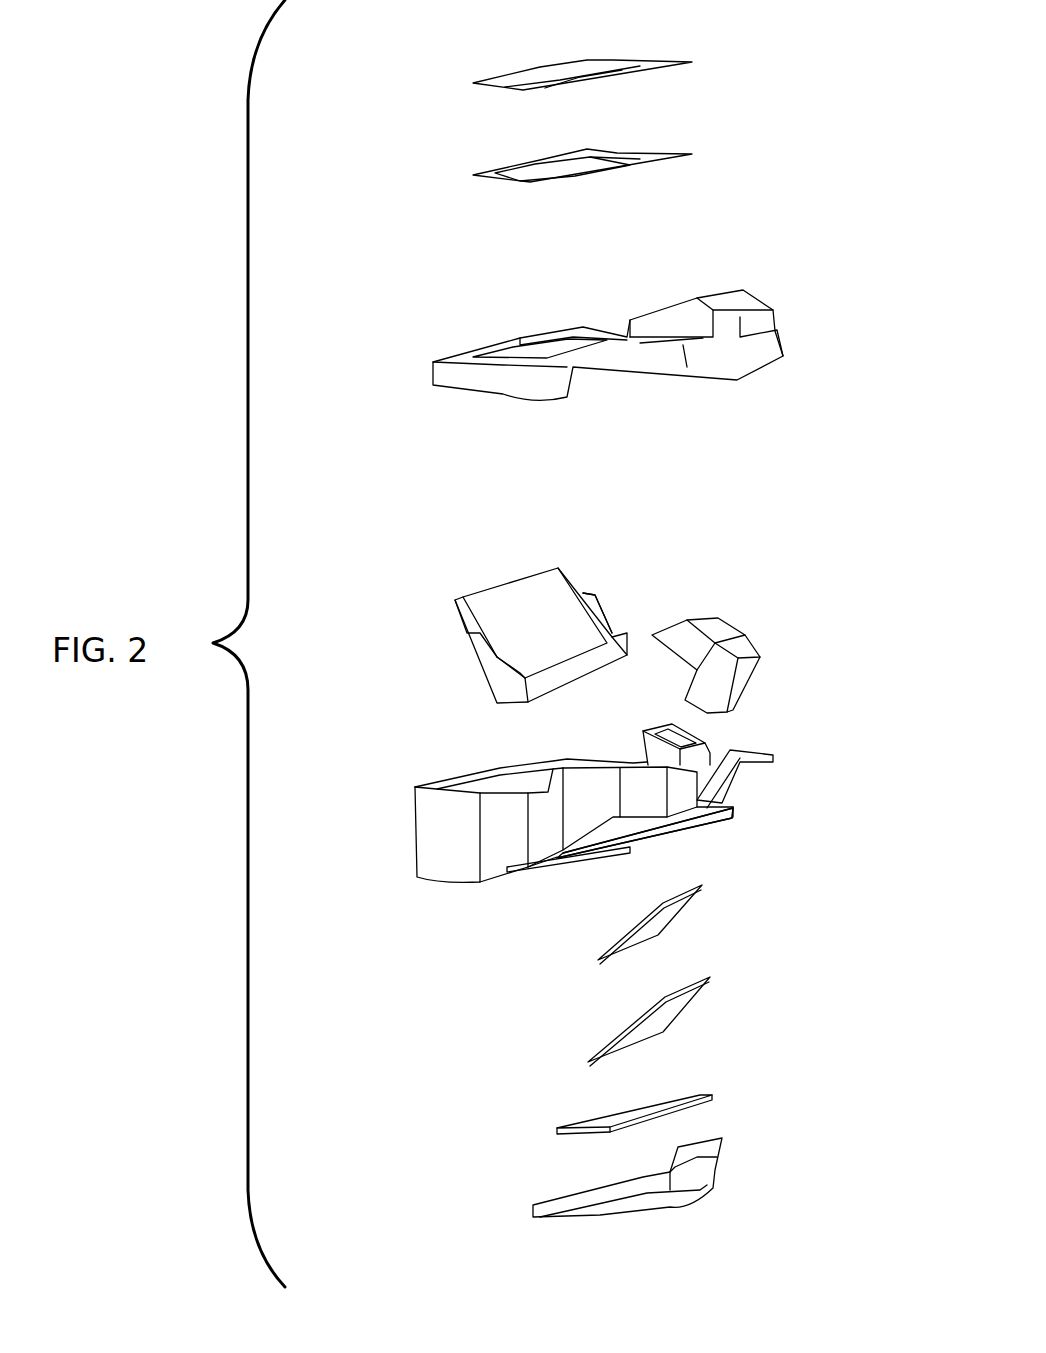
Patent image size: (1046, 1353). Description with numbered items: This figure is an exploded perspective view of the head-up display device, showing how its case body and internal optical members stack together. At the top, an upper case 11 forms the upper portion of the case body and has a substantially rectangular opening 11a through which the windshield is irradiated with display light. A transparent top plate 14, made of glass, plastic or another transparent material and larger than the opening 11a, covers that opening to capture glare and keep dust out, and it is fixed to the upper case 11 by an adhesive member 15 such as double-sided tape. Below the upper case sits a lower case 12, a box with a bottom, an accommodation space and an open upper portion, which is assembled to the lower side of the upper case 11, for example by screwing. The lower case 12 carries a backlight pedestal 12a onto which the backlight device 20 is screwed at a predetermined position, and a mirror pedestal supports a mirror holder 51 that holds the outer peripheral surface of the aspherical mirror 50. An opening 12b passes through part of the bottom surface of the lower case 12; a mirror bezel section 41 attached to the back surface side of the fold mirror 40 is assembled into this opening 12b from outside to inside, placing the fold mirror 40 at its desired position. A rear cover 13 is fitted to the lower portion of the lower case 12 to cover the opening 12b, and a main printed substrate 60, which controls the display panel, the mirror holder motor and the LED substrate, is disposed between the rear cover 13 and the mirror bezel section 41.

The upper case 11 is at (641, 321).
The opening 11a is at (548, 348).
The lower case 12 is at (415, 843).
The backlight pedestal 12a is at (707, 730).
The opening 12b is at (673, 847).
The rear cover 13 is at (712, 1170).
The top plate 14 is at (610, 60).
The adhesive member 15 is at (637, 153).
The backlight device 20 is at (735, 617).
The fold mirror 40 is at (627, 934).
The mirror bezel section 41 is at (617, 1035).
The aspherical mirror 50 is at (487, 603).
The mirror holder 51 is at (603, 617).
The main printed substrate 60 is at (663, 1098).